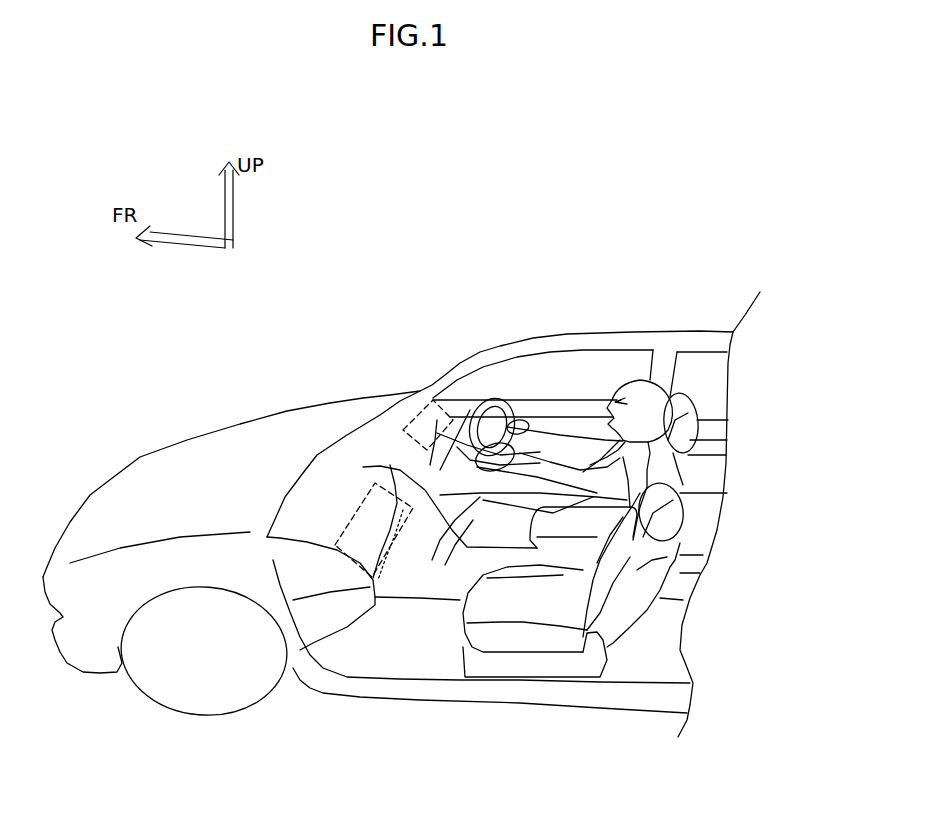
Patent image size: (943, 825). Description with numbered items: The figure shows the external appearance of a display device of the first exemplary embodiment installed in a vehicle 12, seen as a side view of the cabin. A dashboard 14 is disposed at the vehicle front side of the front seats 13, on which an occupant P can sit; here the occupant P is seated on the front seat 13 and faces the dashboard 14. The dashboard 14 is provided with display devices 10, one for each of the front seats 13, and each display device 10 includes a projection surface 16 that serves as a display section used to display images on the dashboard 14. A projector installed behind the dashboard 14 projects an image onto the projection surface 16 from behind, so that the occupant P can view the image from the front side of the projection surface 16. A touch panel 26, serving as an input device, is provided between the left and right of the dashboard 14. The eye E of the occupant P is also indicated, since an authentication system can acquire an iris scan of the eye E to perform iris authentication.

The display device 10 is at (301, 453).
The vehicle 12 is at (401, 474).
The front seat 13 is at (645, 534).
The dashboard 14 is at (385, 467).
The projection surface 16 is at (301, 433).
The touch panel 26 is at (417, 592).
The eye E is at (604, 332).
The occupant P is at (552, 416).